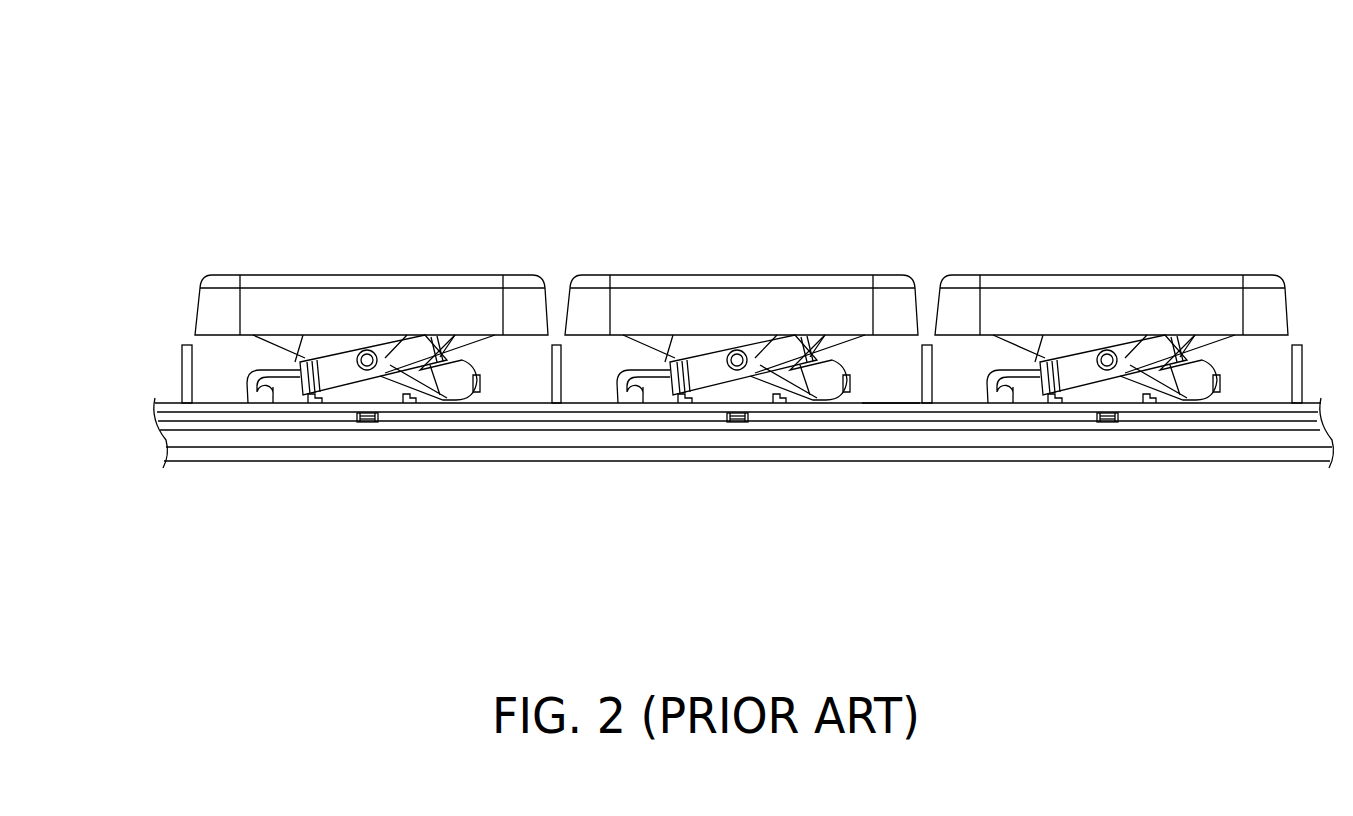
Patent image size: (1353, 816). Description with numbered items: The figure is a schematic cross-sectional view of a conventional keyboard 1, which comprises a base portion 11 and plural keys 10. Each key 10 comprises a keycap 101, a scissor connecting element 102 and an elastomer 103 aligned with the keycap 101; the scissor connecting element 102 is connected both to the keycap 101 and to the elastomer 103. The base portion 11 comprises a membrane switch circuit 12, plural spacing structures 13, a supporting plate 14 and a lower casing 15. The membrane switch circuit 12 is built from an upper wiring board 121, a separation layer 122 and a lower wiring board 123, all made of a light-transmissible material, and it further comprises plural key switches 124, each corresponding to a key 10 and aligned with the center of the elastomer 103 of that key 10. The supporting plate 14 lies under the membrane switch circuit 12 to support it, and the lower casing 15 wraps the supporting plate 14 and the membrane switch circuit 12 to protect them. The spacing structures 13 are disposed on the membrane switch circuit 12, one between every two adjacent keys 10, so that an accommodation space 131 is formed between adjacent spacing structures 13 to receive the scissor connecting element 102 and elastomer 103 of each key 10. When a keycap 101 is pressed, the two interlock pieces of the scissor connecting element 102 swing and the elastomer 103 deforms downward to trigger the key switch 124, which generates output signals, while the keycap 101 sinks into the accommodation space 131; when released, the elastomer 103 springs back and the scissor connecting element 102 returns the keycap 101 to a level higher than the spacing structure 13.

The keyboard 1 is at (1278, 87).
The key 10 is at (338, 207).
The keycap 101 is at (452, 283).
The scissor connecting element 102 is at (398, 355).
The elastomer 103 is at (352, 395).
The base portion 11 is at (635, 582).
The membrane switch circuit 12 is at (428, 520).
The upper wiring board 121 is at (540, 404).
The separation layer 122 is at (485, 413).
The lower wiring board 123 is at (430, 431).
The key switch 124 is at (370, 423).
The spacing structure 13 is at (190, 366).
The accommodation space 131 is at (885, 375).
The supporting plate 14 is at (625, 437).
The lower casing 15 is at (568, 455).